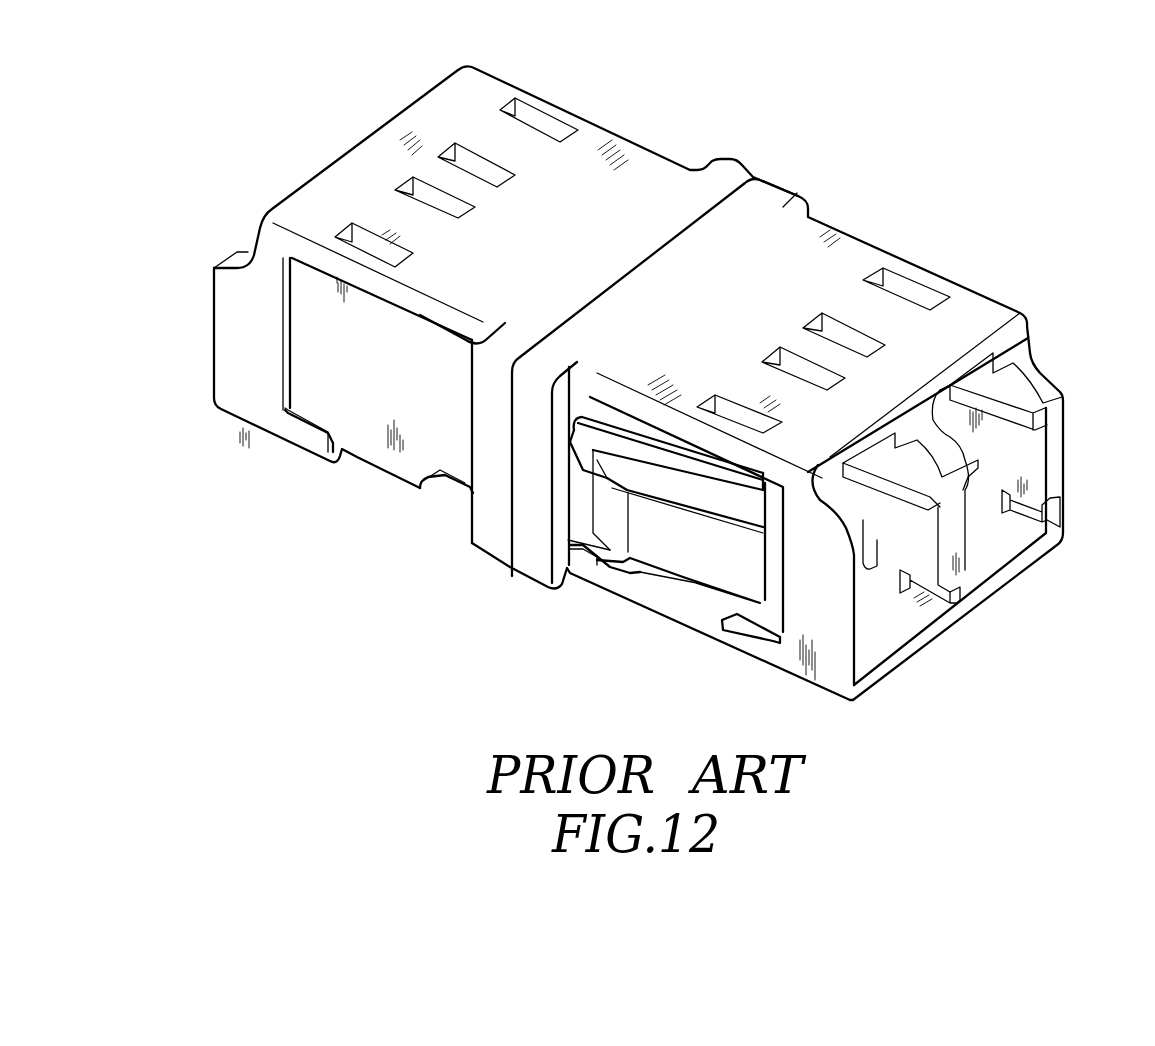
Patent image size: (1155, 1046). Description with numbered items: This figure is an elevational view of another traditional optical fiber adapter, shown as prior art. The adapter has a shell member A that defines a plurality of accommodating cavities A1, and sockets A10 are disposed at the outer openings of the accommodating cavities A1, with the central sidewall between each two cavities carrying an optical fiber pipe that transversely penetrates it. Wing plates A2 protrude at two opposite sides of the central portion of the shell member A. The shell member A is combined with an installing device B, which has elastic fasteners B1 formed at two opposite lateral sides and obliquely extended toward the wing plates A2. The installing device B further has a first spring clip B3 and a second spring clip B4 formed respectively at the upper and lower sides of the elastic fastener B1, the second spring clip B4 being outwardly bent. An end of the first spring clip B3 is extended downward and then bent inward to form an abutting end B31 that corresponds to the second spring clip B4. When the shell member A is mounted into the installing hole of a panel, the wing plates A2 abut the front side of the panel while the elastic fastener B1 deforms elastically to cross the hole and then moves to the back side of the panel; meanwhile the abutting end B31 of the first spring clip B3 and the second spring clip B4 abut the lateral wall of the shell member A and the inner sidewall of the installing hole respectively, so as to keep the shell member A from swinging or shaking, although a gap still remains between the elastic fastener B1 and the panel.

The shell member A is at (886, 234).
The accommodating cavity A1 is at (1003, 452).
The socket A10 is at (1033, 470).
The wing plate A2 is at (530, 566).
The installing device B is at (580, 556).
The elastic fastener B1 is at (748, 575).
The first spring clip B3 is at (680, 470).
The abutting end B31 is at (590, 466).
The second spring clip B4 is at (597, 565).